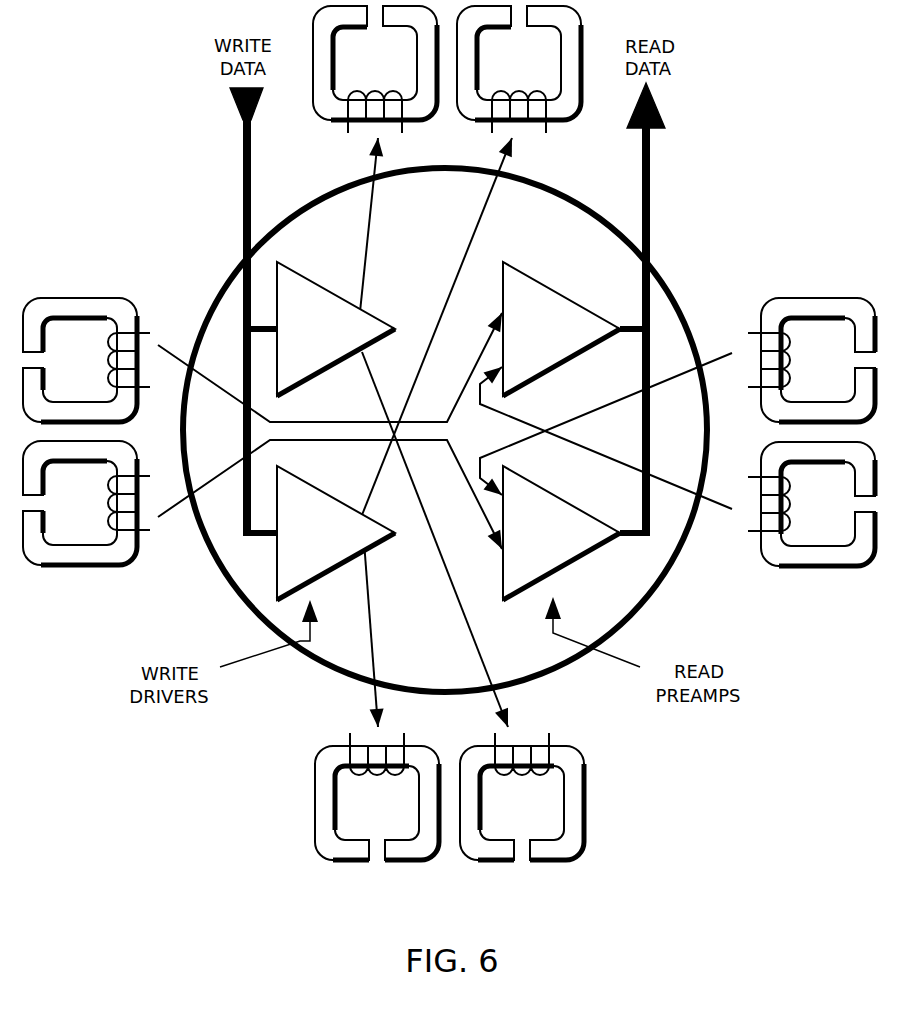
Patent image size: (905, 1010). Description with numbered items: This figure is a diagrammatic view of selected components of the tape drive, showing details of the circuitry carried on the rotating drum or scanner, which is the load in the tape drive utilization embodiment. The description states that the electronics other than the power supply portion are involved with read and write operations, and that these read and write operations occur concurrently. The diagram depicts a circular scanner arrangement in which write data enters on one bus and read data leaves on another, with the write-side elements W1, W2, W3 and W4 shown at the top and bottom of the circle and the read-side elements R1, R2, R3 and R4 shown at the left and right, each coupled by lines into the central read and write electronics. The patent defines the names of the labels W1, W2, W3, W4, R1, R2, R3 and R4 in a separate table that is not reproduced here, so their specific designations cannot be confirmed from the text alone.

The write head W1 is at (375, 69).
The write head W2 is at (519, 69).
The write head W3 is at (522, 796).
The write head W4 is at (377, 796).
The read head R1 is at (86, 503).
The read head R2 is at (86, 360).
The read head R3 is at (811, 360).
The read head R4 is at (811, 504).